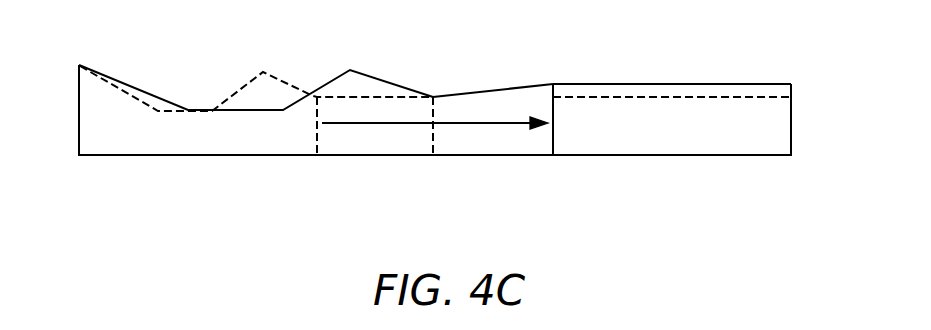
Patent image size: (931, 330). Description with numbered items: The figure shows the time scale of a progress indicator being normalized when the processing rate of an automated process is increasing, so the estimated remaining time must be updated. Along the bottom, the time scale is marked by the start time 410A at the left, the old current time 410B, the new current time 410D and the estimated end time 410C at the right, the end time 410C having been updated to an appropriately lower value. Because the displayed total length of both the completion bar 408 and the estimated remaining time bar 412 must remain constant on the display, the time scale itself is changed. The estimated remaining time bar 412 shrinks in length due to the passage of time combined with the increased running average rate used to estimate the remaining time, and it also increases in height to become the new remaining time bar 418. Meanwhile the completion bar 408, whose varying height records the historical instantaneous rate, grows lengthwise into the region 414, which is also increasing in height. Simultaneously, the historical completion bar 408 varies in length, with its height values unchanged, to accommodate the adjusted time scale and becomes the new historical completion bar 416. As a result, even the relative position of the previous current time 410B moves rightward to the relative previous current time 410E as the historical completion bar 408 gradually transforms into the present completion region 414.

The completion bar 408 is at (243, 87).
The estimated remaining time bar 412 is at (748, 97).
The region 414 is at (494, 90).
The new historical completion bar 416 is at (376, 77).
The new remaining time bar 418 is at (657, 84).
The start time 410A is at (75, 214).
The old current time 410B is at (317, 214).
The estimated end time 410C is at (790, 213).
The new current time 410D is at (553, 214).
The relative previous current time 410E is at (433, 214).